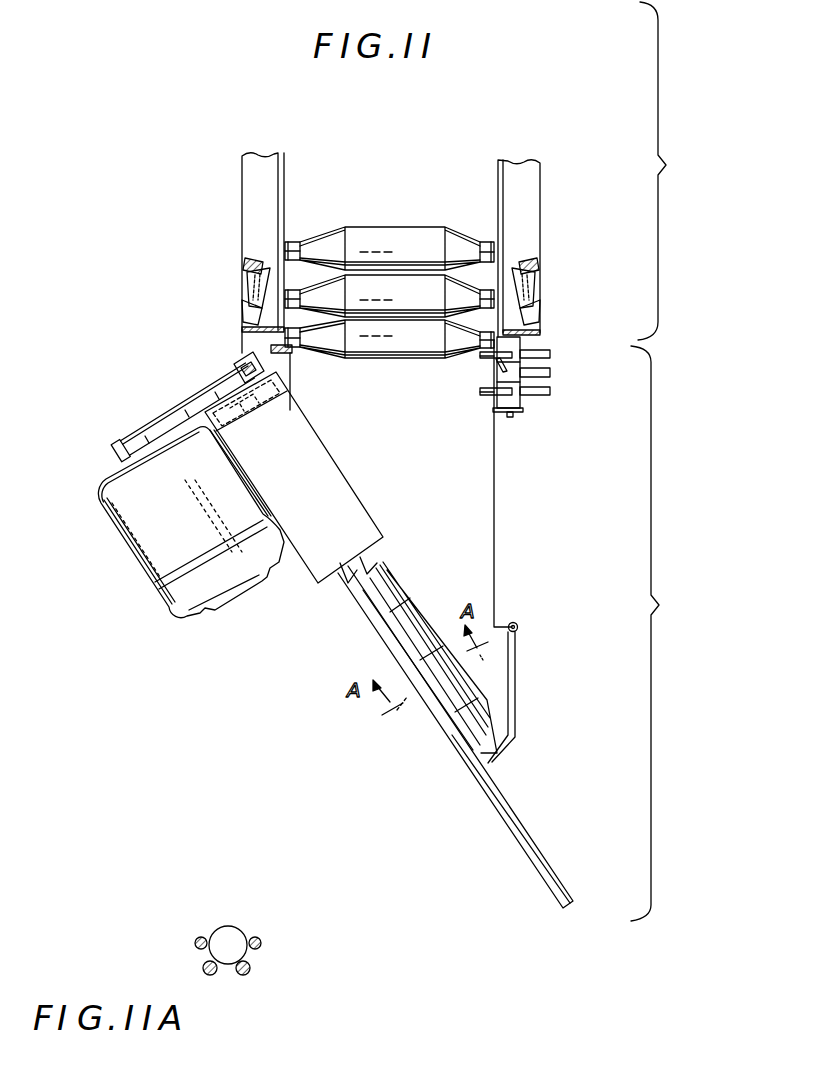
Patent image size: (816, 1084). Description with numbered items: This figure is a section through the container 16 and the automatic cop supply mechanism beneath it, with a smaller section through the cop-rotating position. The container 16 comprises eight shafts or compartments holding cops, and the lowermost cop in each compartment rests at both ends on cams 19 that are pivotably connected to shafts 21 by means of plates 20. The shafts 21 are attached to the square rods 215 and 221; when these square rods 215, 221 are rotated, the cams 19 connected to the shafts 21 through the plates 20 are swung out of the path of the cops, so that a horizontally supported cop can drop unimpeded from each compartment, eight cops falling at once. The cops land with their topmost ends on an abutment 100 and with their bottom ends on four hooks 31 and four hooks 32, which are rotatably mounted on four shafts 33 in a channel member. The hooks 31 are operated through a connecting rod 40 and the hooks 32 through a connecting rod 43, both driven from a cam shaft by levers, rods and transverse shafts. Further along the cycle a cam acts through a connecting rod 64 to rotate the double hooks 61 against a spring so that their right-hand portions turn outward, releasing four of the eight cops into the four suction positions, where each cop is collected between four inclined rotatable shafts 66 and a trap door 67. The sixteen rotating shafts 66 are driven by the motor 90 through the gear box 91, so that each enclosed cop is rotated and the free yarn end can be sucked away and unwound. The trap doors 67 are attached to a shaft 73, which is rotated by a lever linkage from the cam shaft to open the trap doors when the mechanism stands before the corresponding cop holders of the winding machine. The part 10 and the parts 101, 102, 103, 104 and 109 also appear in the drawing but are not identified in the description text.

In FIG. 11, the support frame section 10 is at (659, 633).
In FIG. 11, the container 16 is at (668, 171).
In FIG. 11, the cams 19 is at (248, 332).
In FIG. 11, the plates 20 is at (250, 311).
In FIG. 11, the shafts 21 is at (256, 291).
In FIG. 11, the square rod 221 is at (246, 266).
In FIG. 11, the square rod 215 is at (530, 268).
In FIG. 11, the hooks 31 is at (482, 372).
In FIG. 11, the hooks 32 is at (470, 358).
In FIG. 11, the shafts 33 is at (513, 418).
In FIG. 11, the connecting rod 40 is at (551, 354).
In FIG. 11, the connecting rod 43 is at (551, 372).
In FIG. 11, the double hooks 61 is at (482, 395).
In FIG. 11, the connecting rod 64 is at (551, 391).
In FIG. 11, the inclined rotatable shafts 66 is at (398, 603).
In FIG. 11A, the inclined rotatable shafts 66 is at (204, 969).
In FIG. 11, the trap door 67 is at (516, 662).
In FIG. 11, the shaft 73 is at (518, 627).
In FIG. 11, the motor 90 is at (102, 487).
In FIG. 11, the gear box 91 is at (316, 582).
In FIG. 11, the abutment 100 is at (288, 355).
In FIG. 11, the end cap 101 is at (116, 446).
In FIG. 11, the rail 102 is at (171, 414).
In FIG. 11, the rail cap 103 is at (181, 397).
In FIG. 11, the cover plate 104 is at (258, 436).
In FIG. 11, the shaft 109 is at (473, 681).
In FIG. 11A, the shaft 109 is at (239, 932).